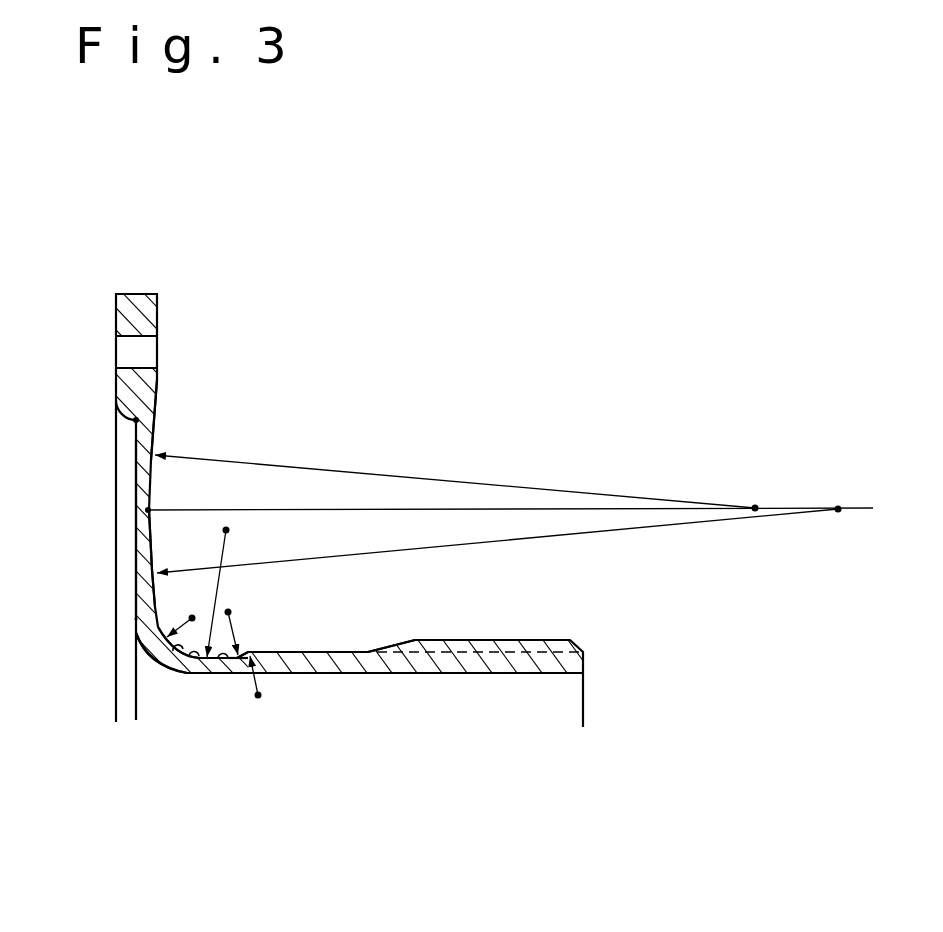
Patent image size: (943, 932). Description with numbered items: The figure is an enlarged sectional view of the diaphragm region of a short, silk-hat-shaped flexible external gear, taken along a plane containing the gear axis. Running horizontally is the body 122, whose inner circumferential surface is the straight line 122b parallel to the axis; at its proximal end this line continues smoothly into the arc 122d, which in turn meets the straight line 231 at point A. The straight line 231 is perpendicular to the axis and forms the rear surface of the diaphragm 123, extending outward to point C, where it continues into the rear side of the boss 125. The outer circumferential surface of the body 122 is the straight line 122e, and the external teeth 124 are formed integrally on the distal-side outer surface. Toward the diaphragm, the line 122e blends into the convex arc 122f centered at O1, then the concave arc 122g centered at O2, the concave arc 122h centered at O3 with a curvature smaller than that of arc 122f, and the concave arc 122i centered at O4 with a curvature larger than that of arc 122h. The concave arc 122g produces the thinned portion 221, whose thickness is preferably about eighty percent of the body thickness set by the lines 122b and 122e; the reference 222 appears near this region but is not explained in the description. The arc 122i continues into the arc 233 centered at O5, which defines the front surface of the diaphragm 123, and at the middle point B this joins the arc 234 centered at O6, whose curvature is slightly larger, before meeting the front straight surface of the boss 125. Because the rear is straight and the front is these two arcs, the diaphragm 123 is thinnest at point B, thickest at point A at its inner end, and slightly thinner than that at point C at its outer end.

The body 122 is at (515, 702).
The straight line 122b is at (427, 675).
The arc 122d is at (178, 672).
The straight line 122e is at (362, 650).
The convex arc 122f is at (260, 654).
The concave arc 122g is at (220, 675).
The concave arc 122h is at (187, 657).
The concave arc 122i is at (160, 647).
The diaphragm 123 is at (100, 523).
The external teeth 124 is at (528, 640).
The boss 125 is at (93, 357).
The thinned portion 221 is at (238, 675).
The contact portion 222 is at (162, 661).
The straight line 231 is at (137, 482).
The arc 233 is at (152, 550).
The arc 234 is at (155, 432).
The point A is at (134, 619).
The point B is at (149, 509).
The point C is at (131, 420).
The center point O1 is at (269, 695).
The center point O2 is at (249, 619).
The center point O3 is at (241, 589).
The center point O4 is at (181, 610).
The center point O5 is at (499, 540).
The center point O6 is at (510, 483).